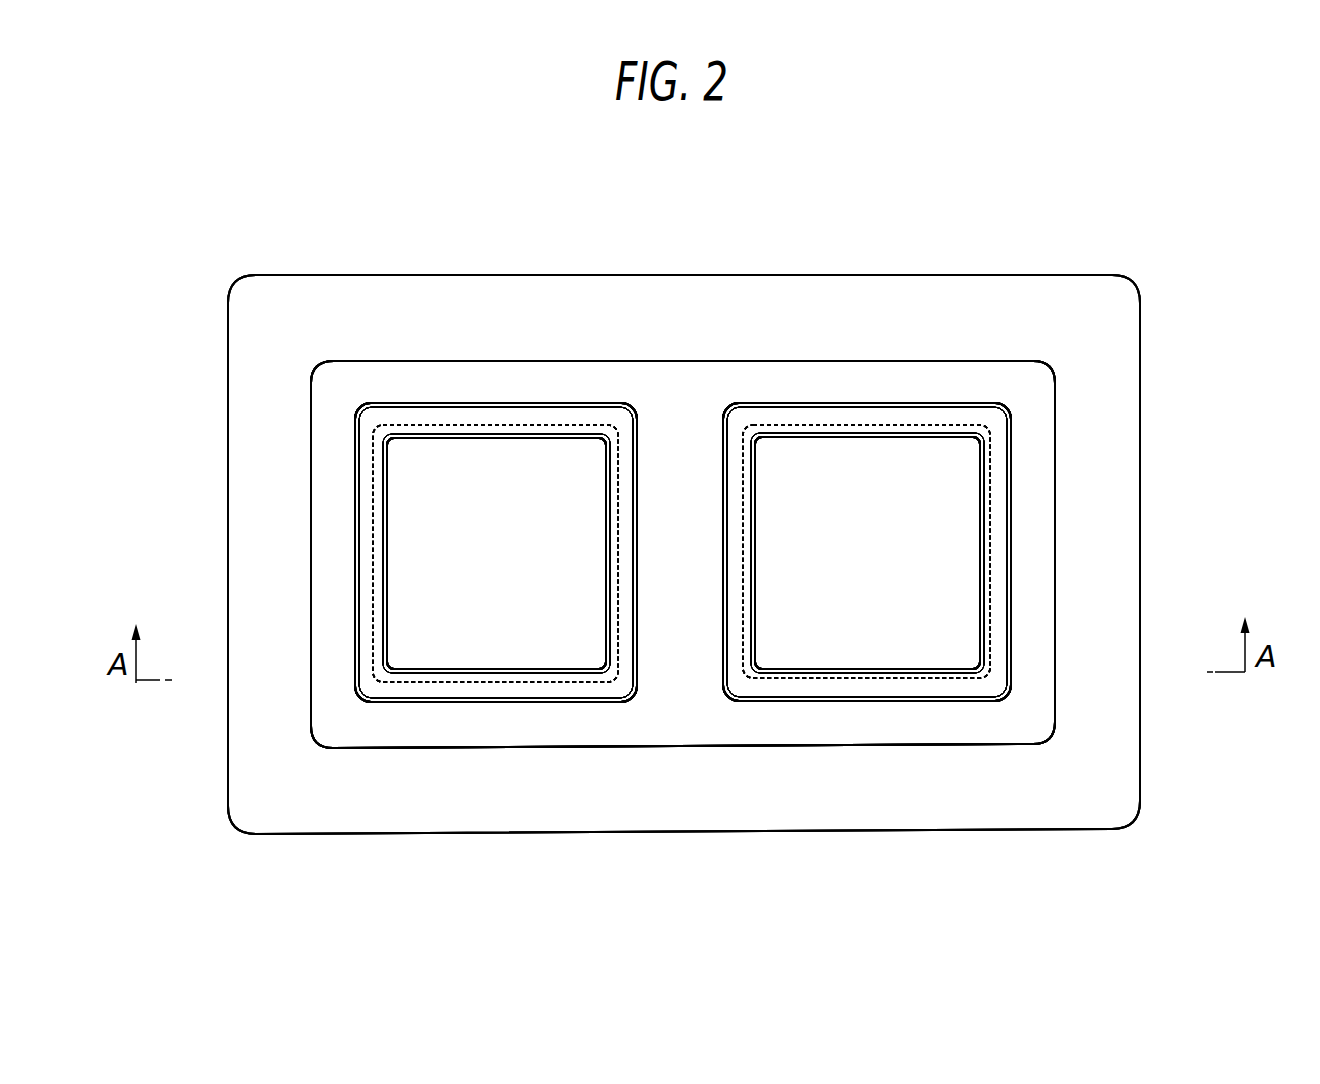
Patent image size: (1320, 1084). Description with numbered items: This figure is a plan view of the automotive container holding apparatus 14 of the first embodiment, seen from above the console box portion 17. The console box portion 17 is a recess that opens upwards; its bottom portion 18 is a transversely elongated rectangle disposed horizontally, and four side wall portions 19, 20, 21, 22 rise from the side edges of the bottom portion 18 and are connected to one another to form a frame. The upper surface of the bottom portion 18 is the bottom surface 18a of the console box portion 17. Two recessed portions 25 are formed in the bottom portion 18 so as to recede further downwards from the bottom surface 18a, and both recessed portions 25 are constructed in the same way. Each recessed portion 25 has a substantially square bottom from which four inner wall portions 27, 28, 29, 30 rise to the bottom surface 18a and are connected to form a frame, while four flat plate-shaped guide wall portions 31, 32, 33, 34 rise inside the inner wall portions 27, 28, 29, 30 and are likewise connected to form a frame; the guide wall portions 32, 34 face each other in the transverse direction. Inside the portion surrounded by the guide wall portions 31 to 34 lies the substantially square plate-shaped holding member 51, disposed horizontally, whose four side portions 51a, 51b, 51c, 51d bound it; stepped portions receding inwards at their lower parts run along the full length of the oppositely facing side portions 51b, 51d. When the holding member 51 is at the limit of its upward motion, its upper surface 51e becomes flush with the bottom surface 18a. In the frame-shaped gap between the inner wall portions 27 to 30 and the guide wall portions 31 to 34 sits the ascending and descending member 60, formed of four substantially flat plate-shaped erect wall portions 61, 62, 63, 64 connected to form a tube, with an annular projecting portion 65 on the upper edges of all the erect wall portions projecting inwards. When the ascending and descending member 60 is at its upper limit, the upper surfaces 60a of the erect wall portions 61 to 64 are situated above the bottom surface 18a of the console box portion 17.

The automotive container holding apparatus 14 is at (240, 234).
The console box portion 17 is at (671, 260).
The bottom portion 18 is at (752, 377).
The bottom surface 18a is at (500, 383).
The side wall portion 19 is at (863, 360).
The side wall portion 20 is at (1042, 546).
The side wall portion 21 is at (750, 748).
The side wall portion 22 is at (316, 502).
The recessed portion 25 is at (386, 410).
The inner wall portion 27 is at (542, 404).
The inner wall portion 28 is at (997, 485).
The inner wall portion 29 is at (462, 694).
The inner wall portion 30 is at (358, 614).
The guide wall portion 31 is at (442, 427).
The guide wall portion 32 is at (620, 443).
The guide wall portion 33 is at (420, 685).
The guide wall portion 34 is at (365, 548).
The holding member 51 is at (406, 483).
The side portion 51a is at (425, 437).
The side portion 51b is at (982, 600).
The side portion 51c is at (517, 672).
The side portion 51d is at (380, 478).
The upper surface 51e is at (417, 647).
The ascending and descending member 60 is at (348, 709).
The upper surface 60a is at (473, 420).
The erect wall portion 61 is at (517, 418).
The erect wall portion 62 is at (627, 572).
The erect wall portion 63 is at (393, 693).
The erect wall portion 64 is at (365, 641).
The annular projecting portion 65 is at (558, 433).